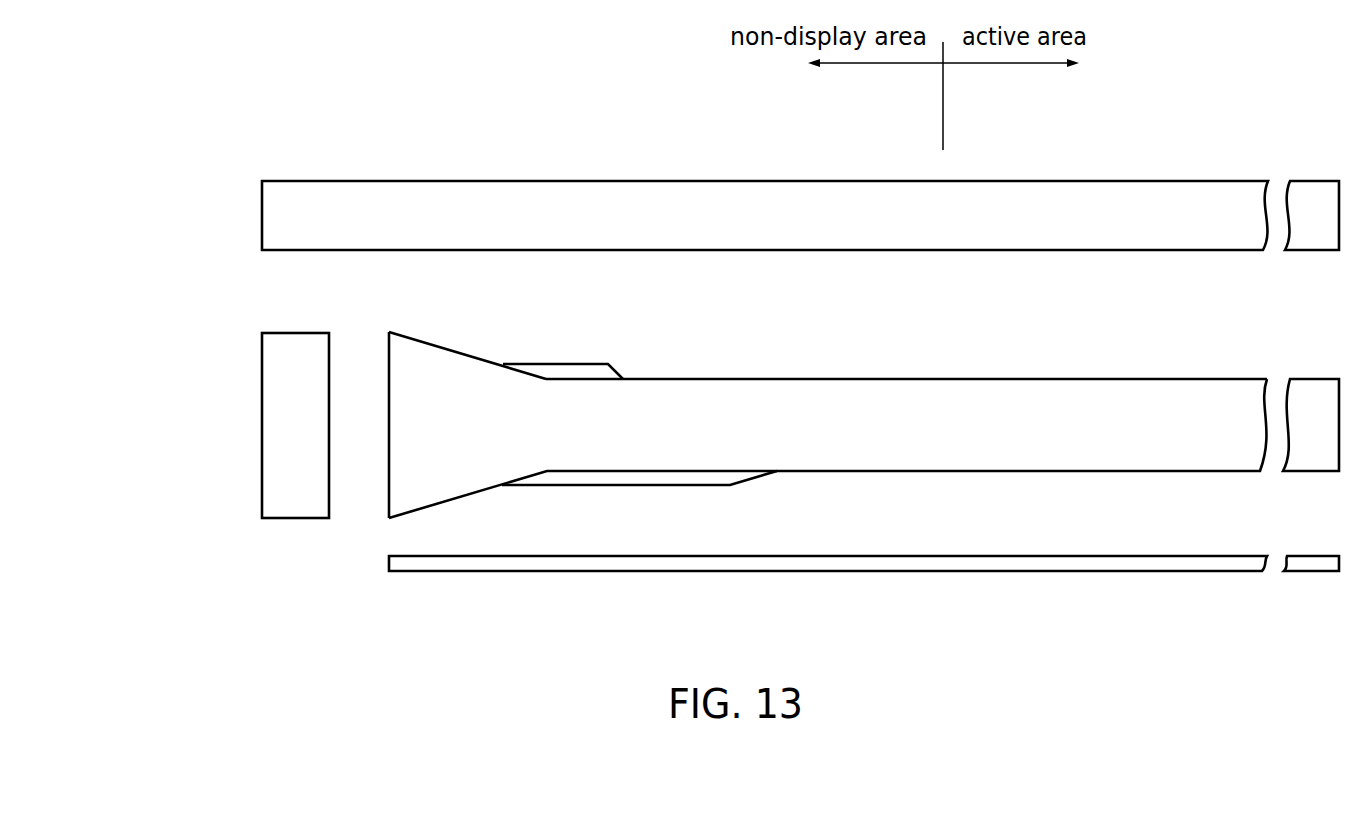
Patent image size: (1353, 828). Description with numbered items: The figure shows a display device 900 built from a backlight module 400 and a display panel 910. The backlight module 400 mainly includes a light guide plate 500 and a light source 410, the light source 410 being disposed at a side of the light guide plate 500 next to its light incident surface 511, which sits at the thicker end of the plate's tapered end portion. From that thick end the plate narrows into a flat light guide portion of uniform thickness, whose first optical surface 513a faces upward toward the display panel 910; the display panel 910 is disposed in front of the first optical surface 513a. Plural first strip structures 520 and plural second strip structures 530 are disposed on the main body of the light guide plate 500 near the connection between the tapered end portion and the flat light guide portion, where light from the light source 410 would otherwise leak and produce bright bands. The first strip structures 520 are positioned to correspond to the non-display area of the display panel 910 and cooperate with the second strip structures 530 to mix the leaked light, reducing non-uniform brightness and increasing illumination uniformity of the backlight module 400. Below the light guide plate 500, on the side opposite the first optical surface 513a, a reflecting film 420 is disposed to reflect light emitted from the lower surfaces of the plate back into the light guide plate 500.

The display device 900 is at (168, 103).
The display panel 910 is at (1015, 198).
The backlight module 400 is at (140, 338).
The light source 410 is at (277, 362).
The light guide plate 500 is at (412, 431).
The light incident surface 511 is at (387, 490).
The first optical surface 513a is at (1058, 378).
The first strip structures 520 is at (593, 373).
The second strip structures 530 is at (742, 477).
The reflecting film 420 is at (1058, 563).